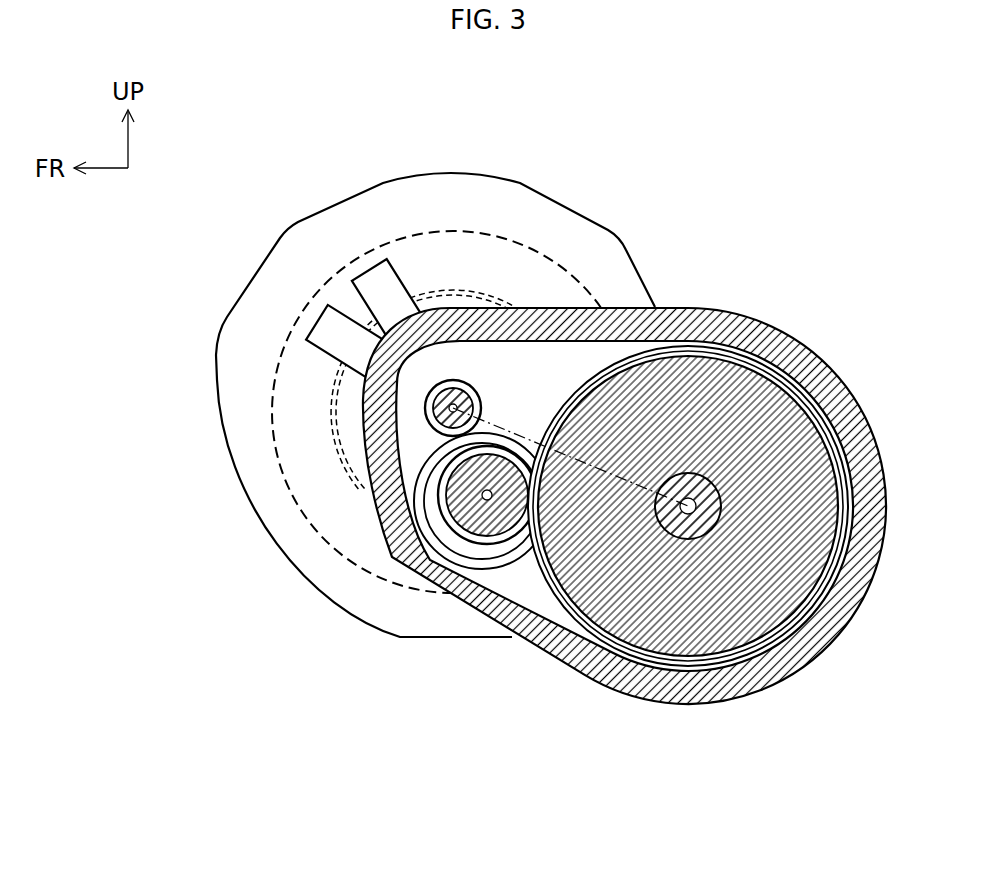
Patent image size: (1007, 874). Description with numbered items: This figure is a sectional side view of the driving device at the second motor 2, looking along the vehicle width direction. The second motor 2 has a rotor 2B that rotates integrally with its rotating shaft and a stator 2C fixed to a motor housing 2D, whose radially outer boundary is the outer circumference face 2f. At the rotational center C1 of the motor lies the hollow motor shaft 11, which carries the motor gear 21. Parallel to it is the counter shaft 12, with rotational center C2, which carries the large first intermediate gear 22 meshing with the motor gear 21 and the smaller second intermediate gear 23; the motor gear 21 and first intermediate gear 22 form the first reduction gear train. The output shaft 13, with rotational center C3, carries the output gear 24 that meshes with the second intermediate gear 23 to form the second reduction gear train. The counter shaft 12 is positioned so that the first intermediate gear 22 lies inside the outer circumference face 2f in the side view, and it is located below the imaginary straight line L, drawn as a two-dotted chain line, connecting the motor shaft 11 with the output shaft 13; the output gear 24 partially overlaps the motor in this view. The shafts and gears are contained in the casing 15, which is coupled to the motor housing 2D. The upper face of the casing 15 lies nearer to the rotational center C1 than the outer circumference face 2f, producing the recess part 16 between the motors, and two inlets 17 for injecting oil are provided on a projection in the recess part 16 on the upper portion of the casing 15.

The second motor 2 is at (232, 199).
The rotor 2B is at (440, 287).
The stator 2C is at (402, 238).
The motor housing 2D is at (198, 377).
The outer circumference face 2f is at (227, 318).
The motor shaft 11 is at (430, 422).
The counter shaft 12 is at (462, 540).
The output shaft 13 is at (723, 523).
The casing 15 is at (840, 341).
The recess part 16 is at (505, 257).
The inlet 17 is at (380, 258).
The motor gear 21 is at (473, 385).
The first intermediate gear 22 is at (510, 430).
The second intermediate gear 23 is at (506, 553).
The output gear 24 is at (800, 627).
The rotational center C1 is at (433, 413).
The rotational center C2 is at (470, 512).
The rotational center C3 is at (683, 517).
The imaginary straight line L is at (540, 434).